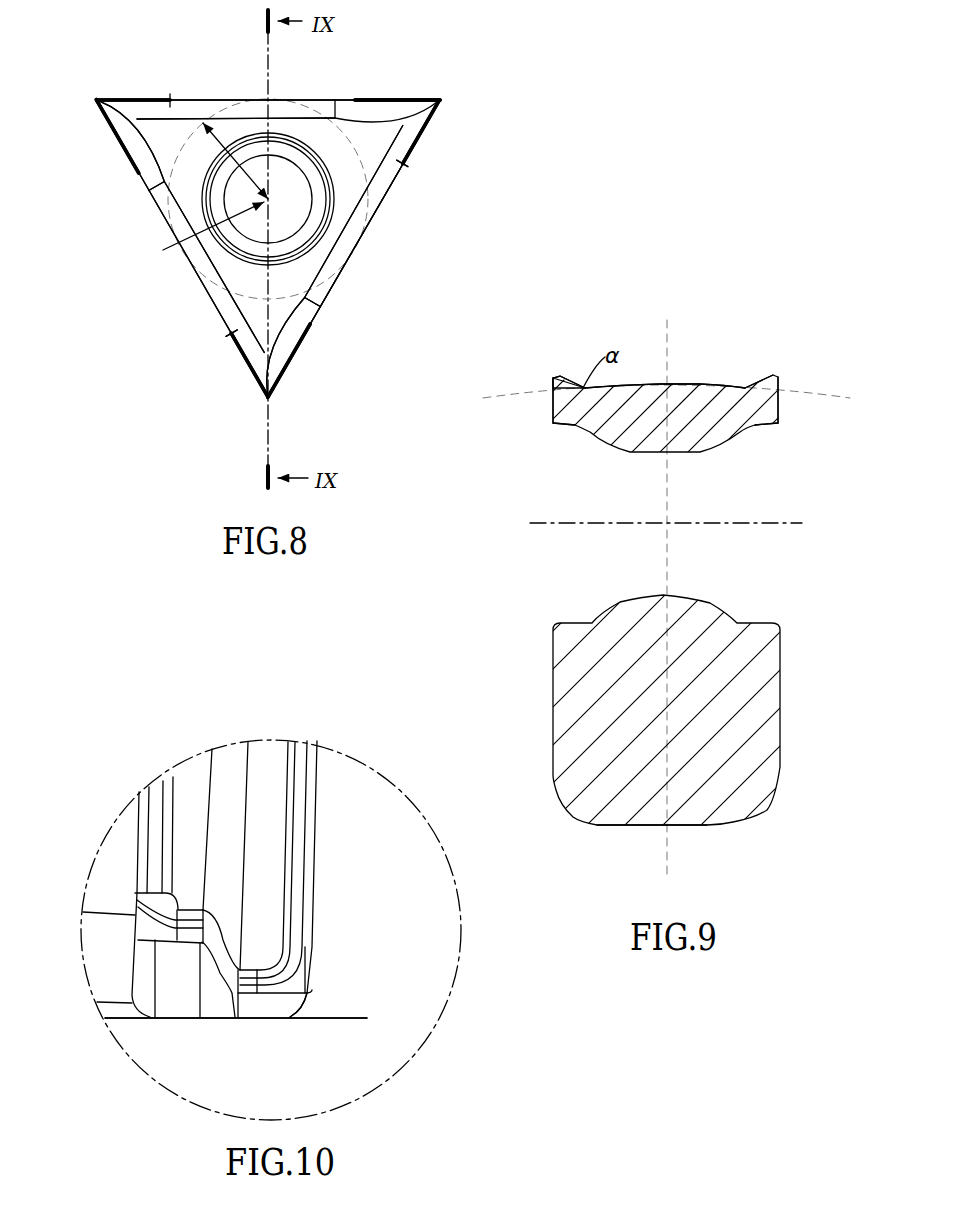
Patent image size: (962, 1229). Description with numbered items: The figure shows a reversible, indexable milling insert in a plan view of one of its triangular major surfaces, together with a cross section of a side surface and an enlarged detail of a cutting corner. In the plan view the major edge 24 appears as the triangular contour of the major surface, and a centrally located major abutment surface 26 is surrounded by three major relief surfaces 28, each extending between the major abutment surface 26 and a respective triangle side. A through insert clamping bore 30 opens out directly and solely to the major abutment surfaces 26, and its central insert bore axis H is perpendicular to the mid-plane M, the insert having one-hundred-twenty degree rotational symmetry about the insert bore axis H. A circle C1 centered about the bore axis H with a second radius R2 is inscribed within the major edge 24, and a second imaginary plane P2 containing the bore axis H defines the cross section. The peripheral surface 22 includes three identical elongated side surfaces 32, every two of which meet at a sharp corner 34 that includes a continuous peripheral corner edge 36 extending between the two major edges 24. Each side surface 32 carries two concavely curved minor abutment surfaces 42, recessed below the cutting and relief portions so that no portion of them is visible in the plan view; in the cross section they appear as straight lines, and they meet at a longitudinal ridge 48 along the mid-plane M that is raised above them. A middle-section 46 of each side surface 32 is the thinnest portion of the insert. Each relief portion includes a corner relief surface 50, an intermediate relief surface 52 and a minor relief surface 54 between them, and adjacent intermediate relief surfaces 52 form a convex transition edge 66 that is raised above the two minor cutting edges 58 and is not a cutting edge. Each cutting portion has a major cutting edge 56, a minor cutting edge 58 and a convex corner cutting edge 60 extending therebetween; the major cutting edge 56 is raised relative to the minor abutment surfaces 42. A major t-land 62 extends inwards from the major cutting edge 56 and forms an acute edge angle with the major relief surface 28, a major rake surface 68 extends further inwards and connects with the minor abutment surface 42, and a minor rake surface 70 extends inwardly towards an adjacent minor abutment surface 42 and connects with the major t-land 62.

In FIG. 8, the peripheral surface 22 is at (222, 94).
In FIG. 8, the major edge 24 is at (136, 96).
In FIG. 8, the major abutment surface 26 is at (347, 167).
In FIG. 8, the major relief surface 28 is at (398, 164).
In FIG. 9, the major relief surface 28 is at (553, 380).
In FIG. 8, the insert clamping bore 30 is at (293, 177).
In FIG. 8, the side surface 32 is at (258, 96).
In FIG. 8, the sharp corner 34 is at (273, 400).
In FIG. 8, the peripheral corner edge 36 is at (387, 271).
In FIG. 9, the minor abutment surface 42 is at (633, 385).
In FIG. 10, the minor abutment surface 42 is at (193, 807).
In FIG. 8, the middle-section 46 is at (282, 88).
In FIG. 9, the longitudinal ridge 48 is at (670, 385).
In FIG. 10, the longitudinal ridge 48 is at (225, 840).
In FIG. 8, the corner relief surface 50 is at (116, 113).
In FIG. 10, the corner relief surface 50 is at (145, 993).
In FIG. 10, the intermediate relief surface 52 is at (215, 1007).
In FIG. 10, the minor relief surface 54 is at (177, 1005).
In FIG. 8, the major cutting edge 56 is at (333, 293).
In FIG. 9, the major cutting edge 56 is at (553, 377).
In FIG. 10, the major cutting edge 56 is at (315, 882).
In FIG. 9, the minor cutting edge 58 is at (618, 826).
In FIG. 10, the minor cutting edge 58 is at (273, 1020).
In FIG. 8, the corner cutting edge 60 is at (98, 101).
In FIG. 10, the corner cutting edge 60 is at (303, 1008).
In FIG. 9, the major t-land 62 is at (560, 377).
In FIG. 10, the major t-land 62 is at (308, 903).
In FIG. 9, the transition edge 66 is at (660, 826).
In FIG. 10, the major rake surface 68 is at (297, 938).
In FIG. 10, the minor rake surface 70 is at (270, 983).
In FIG. 8, the circle C1 is at (350, 145).
In FIG. 8, the second radius R2 is at (212, 135).
In FIG. 8, the insert bore axis H is at (163, 250).
In FIG. 9, the insert bore axis H is at (787, 523).
In FIG. 8, the second imaginary plane P2 is at (265, 311).
In FIG. 9, the mid-plane M is at (667, 330).